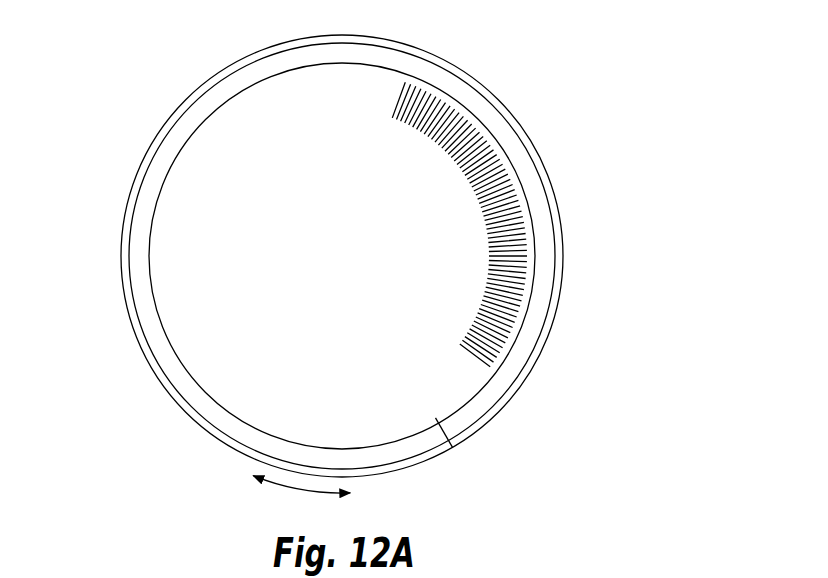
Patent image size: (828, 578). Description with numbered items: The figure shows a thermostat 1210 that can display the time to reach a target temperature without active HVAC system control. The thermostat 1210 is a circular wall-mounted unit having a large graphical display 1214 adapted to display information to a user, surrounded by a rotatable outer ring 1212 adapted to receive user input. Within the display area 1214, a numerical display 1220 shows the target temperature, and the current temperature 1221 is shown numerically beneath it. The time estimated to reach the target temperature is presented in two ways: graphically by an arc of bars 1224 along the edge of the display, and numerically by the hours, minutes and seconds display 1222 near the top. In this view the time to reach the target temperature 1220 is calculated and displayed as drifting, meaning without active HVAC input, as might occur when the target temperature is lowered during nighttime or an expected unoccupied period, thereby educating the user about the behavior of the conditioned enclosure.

The thermostat 1210 is at (202, 55).
The rotatable outer ring 1212 is at (230, 440).
The graphical display 1214 is at (450, 445).
The numerical display of the target temperature 1220 is at (290, 222).
The current temperature 1221 is at (298, 333).
The hours, minutes and seconds display 1222 is at (330, 112).
The bars 1224 is at (530, 222).